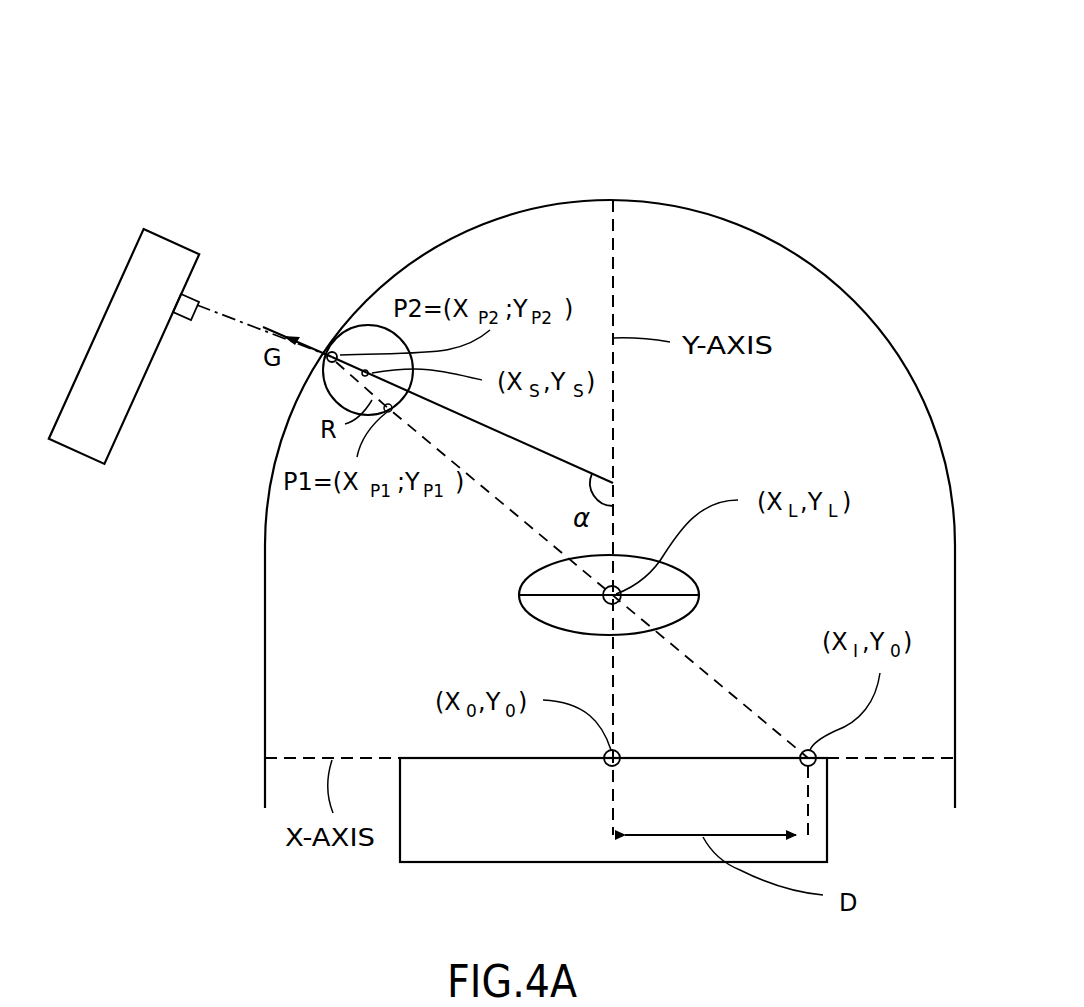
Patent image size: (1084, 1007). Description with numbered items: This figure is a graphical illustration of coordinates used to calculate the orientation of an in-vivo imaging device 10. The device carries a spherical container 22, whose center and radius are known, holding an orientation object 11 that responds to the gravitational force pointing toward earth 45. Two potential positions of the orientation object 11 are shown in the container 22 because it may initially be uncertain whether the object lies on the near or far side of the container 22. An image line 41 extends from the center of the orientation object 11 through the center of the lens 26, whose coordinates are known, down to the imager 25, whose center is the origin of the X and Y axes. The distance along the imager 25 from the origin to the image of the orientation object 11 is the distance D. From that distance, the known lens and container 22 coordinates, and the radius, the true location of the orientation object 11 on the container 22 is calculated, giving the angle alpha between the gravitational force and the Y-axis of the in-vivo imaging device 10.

The in-vivo imaging device 10 is at (416, 74).
The orientation object 11 is at (335, 348).
The container 22 is at (337, 403).
The imager 25 is at (828, 810).
The lens 26 is at (520, 595).
The image line 41 is at (495, 493).
The earth 45 is at (121, 434).